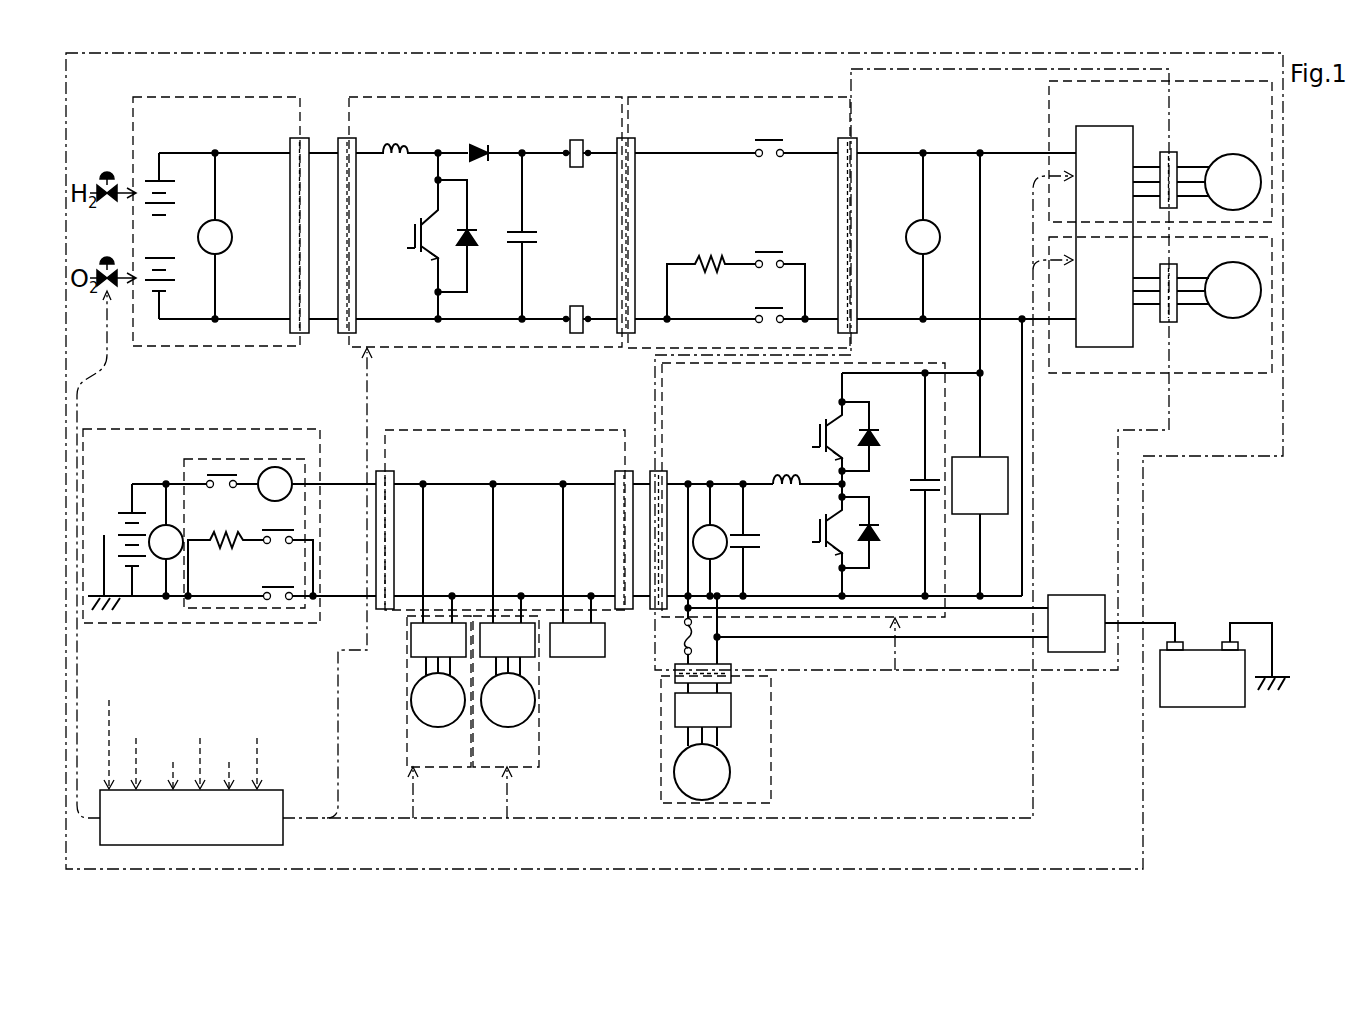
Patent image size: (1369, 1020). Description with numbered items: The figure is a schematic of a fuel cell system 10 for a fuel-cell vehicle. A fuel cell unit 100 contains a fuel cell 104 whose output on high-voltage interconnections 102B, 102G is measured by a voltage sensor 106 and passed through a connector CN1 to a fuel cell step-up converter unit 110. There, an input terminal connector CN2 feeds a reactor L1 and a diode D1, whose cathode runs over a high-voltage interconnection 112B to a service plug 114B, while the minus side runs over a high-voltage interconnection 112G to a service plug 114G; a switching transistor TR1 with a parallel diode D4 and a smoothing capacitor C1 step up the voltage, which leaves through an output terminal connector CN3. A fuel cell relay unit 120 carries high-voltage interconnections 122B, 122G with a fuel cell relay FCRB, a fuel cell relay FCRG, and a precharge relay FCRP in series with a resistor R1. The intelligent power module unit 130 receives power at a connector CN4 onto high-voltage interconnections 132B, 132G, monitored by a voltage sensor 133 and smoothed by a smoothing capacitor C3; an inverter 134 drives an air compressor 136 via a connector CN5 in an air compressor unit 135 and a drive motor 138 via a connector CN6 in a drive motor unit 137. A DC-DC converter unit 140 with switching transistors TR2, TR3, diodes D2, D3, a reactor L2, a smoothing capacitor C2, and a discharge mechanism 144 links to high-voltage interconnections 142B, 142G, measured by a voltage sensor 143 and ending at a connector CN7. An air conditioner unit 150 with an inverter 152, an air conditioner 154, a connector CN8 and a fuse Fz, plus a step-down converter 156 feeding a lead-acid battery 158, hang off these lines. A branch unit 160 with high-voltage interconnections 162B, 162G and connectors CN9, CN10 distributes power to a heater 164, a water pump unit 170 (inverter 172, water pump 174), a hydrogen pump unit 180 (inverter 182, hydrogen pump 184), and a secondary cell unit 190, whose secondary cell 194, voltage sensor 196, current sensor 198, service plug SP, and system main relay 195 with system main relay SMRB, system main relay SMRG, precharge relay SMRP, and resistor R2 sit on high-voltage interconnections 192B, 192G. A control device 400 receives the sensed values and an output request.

The fuel cell system 10 is at (1143, 532).
The fuel cell unit 100 is at (160, 97).
The high-voltage interconnection 102B is at (215, 153).
The high-voltage interconnection 102G is at (215, 319).
The fuel cell 104 is at (150, 170).
The voltage sensor 106 is at (222, 220).
The fuel cell step-up converter unit 110 is at (588, 97).
The high-voltage interconnection 112B is at (503, 153).
The high-voltage interconnection 112G is at (458, 322).
The service plug 114B is at (577, 140).
The service plug 114G is at (577, 333).
The fuel cell relay unit 120 is at (785, 97).
The high-voltage interconnection 122B is at (655, 153).
The high-voltage interconnection 122G is at (660, 318).
The intelligent power module unit 130 is at (1118, 484).
The high-voltage interconnection 132B is at (882, 155).
The high-voltage interconnection 132G is at (880, 317).
The voltage sensor 133 is at (925, 222).
The inverter 134 is at (1076, 140).
The air compressor unit 135 is at (1049, 100).
The air compressor 136 is at (1220, 155).
The drive motor unit 137 is at (1213, 374).
The drive motor 138 is at (1220, 262).
The DC-DC converter unit 140 is at (904, 363).
The high-voltage interconnection 142B is at (680, 483).
The high-voltage interconnection 142G is at (757, 596).
The voltage sensor 143 is at (713, 525).
The discharge mechanism 144 is at (990, 456).
The air conditioner unit 150 is at (770, 735).
The inverter 152 is at (731, 708).
The air conditioner 154 is at (730, 770).
The step-down converter 156 is at (1090, 595).
The lead-acid battery 158 is at (1205, 642).
The branch unit 160 is at (490, 430).
The high-voltage interconnection 162B is at (505, 484).
The high-voltage interconnection 162G is at (505, 596).
The heater 164 is at (578, 657).
The water pump unit 170 is at (532, 772).
The inverter 172 is at (535, 637).
The water pump 174 is at (533, 712).
The hydrogen pump unit 180 is at (447, 772).
The inverter 182 is at (410, 637).
The hydrogen pump 184 is at (437, 728).
The secondary cell unit 190 is at (228, 429).
The high-voltage interconnection 192B is at (178, 484).
The high-voltage interconnection 192G is at (179, 597).
The secondary cell 194 is at (141, 512).
The system main relay 195 is at (306, 497).
The voltage sensor 196 is at (160, 525).
The current sensor 198 is at (270, 467).
The control device 400 is at (272, 790).
The connector CN1 is at (300, 138).
The input terminal connector CN2 is at (347, 138).
The output terminal connector CN3 is at (636, 150).
The connector CN4 is at (847, 138).
The connector CN5 is at (1168, 150).
The connector CN6 is at (1168, 322).
The connector CN7 is at (658, 470).
The connector CN8 is at (720, 663).
The connector CN9 is at (624, 470).
The connector CN10 is at (385, 470).
The diode D1 is at (480, 142).
The diode D2 is at (876, 428).
The diode D3 is at (876, 520).
The diode D4 is at (470, 230).
The reactor L1 is at (408, 148).
The reactor L2 is at (795, 472).
The smoothing capacitor C1 is at (528, 232).
The smoothing capacitor C2 is at (760, 527).
The smoothing capacitor C3 is at (935, 478).
The switching transistor TR1 is at (425, 218).
The switching transistor TR2 is at (832, 418).
The switching transistor TR3 is at (826, 518).
The resistor R1 is at (706, 258).
The resistor R2 is at (200, 548).
The fuel cell relay FCRB is at (772, 138).
The precharge relay FCRP is at (770, 252).
The fuel cell relay FCRG is at (765, 308).
The system main relay SMRB is at (222, 472).
The precharge relay SMRP is at (243, 519).
The system main relay SMRG is at (283, 585).
The service plug SP is at (140, 548).
The fuse Fz is at (852, 574).